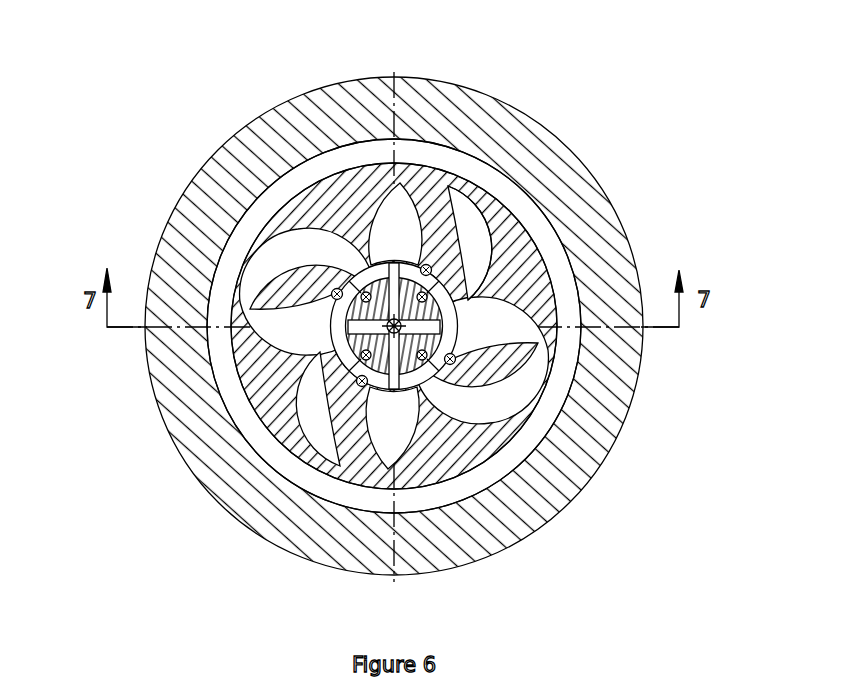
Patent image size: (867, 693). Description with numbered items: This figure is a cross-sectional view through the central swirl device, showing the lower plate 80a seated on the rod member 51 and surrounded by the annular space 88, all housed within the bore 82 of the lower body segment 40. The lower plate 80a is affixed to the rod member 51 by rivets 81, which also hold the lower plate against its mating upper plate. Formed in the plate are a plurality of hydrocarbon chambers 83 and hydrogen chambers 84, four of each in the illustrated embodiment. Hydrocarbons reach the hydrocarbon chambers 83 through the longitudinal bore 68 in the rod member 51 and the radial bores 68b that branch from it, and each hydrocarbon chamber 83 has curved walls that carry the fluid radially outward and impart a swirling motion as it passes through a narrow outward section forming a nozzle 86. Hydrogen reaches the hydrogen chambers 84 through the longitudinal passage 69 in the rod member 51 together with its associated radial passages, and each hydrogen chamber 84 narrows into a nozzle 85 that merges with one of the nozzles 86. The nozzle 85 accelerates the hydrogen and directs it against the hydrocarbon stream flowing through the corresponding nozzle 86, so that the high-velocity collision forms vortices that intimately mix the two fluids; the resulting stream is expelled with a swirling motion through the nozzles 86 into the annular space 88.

The lower body segment 40 is at (175, 270).
The rod member 51 is at (443, 360).
The longitudinal bore 68 is at (357, 342).
The radial bores 68b is at (424, 368).
The longitudinal passage 69 is at (362, 388).
The lower plate 80a is at (335, 208).
The rivets 81 is at (427, 273).
The bore 82 is at (570, 288).
The hydrocarbon chambers 83 is at (380, 207).
The hydrogen chambers 84 is at (510, 203).
The nozzle 85 is at (458, 190).
The nozzle 86 is at (425, 183).
The annular space 88 is at (450, 488).